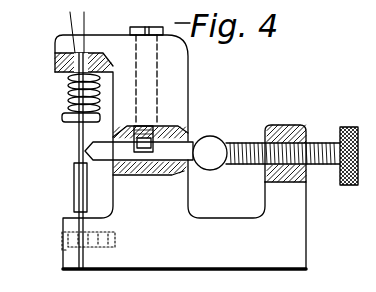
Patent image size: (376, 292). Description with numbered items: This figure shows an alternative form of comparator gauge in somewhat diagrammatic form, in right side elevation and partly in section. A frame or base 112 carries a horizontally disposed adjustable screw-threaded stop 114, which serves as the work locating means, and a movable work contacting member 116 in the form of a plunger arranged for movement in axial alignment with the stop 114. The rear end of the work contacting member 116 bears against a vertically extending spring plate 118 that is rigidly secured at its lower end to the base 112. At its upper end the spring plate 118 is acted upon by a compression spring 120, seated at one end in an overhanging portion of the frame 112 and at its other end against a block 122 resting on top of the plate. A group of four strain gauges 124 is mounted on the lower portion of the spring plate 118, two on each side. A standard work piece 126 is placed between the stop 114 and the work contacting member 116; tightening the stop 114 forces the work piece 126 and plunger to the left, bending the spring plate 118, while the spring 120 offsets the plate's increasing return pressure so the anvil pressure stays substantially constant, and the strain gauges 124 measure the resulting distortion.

The frame or base 112 is at (180, 148).
The adjustable screw-threaded stop 114 is at (321, 142).
The work contacting member 116 is at (193, 143).
The spring plate 118 is at (84, 147).
The compression spring 120 is at (70, 99).
The block 122 is at (66, 118).
The strain gauges 124 is at (85, 197).
The work piece 126 is at (223, 141).